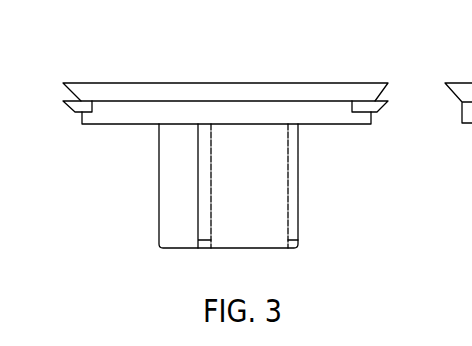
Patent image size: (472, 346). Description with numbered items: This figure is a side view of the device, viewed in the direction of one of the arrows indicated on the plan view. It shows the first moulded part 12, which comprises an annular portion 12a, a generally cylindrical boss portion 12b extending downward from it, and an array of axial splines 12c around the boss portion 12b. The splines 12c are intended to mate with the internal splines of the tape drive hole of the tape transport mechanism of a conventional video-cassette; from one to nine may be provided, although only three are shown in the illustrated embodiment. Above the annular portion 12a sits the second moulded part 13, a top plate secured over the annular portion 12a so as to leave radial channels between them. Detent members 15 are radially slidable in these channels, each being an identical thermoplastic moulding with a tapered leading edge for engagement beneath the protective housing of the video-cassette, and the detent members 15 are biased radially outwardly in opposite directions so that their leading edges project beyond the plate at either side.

The second moulded part 13 is at (135, 92).
The detent member 15 is at (83, 103).
The first moulded part 12 is at (158, 143).
The annular portion 12a is at (321, 127).
The boss portion 12b is at (267, 201).
The axial splines 12c is at (207, 212).